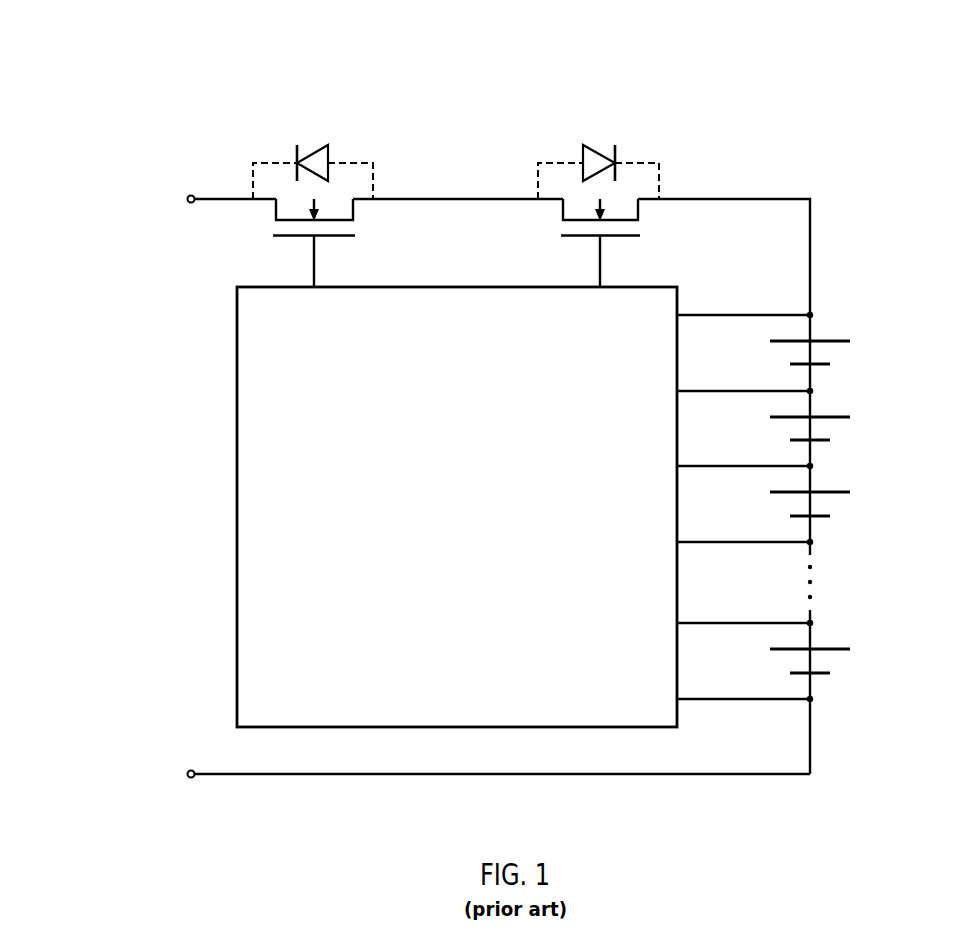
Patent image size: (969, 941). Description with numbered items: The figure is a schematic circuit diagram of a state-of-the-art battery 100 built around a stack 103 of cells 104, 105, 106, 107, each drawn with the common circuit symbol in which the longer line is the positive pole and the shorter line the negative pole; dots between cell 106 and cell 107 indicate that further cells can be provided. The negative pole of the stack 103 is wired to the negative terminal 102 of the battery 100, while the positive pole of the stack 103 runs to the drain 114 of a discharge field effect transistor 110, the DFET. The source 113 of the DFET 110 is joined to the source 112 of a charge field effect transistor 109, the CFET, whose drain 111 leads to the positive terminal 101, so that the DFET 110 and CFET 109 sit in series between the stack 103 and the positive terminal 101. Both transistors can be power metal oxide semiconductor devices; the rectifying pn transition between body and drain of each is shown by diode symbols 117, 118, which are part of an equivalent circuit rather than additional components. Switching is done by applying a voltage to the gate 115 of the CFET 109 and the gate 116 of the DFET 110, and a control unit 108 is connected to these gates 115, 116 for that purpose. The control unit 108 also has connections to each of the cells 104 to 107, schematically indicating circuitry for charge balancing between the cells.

The battery 100 is at (182, 127).
The positive terminal 101 is at (187, 199).
The negative terminal 102 is at (187, 774).
The stack 103 is at (840, 296).
The cell 104 is at (813, 327).
The cell 105 is at (813, 403).
The cell 106 is at (813, 478).
The cell 107 is at (813, 635).
The control unit 108 is at (237, 343).
The charge field effect transistor 109 is at (350, 133).
The discharge field effect transistor 110 is at (637, 133).
The drain 111 is at (211, 197).
The source 112 is at (408, 197).
The source 113 is at (495, 197).
The drain 114 is at (694, 197).
The gate 115 is at (312, 261).
The gate 116 is at (599, 261).
The diode symbol 117 is at (313, 148).
The diode symbol 118 is at (598, 148).